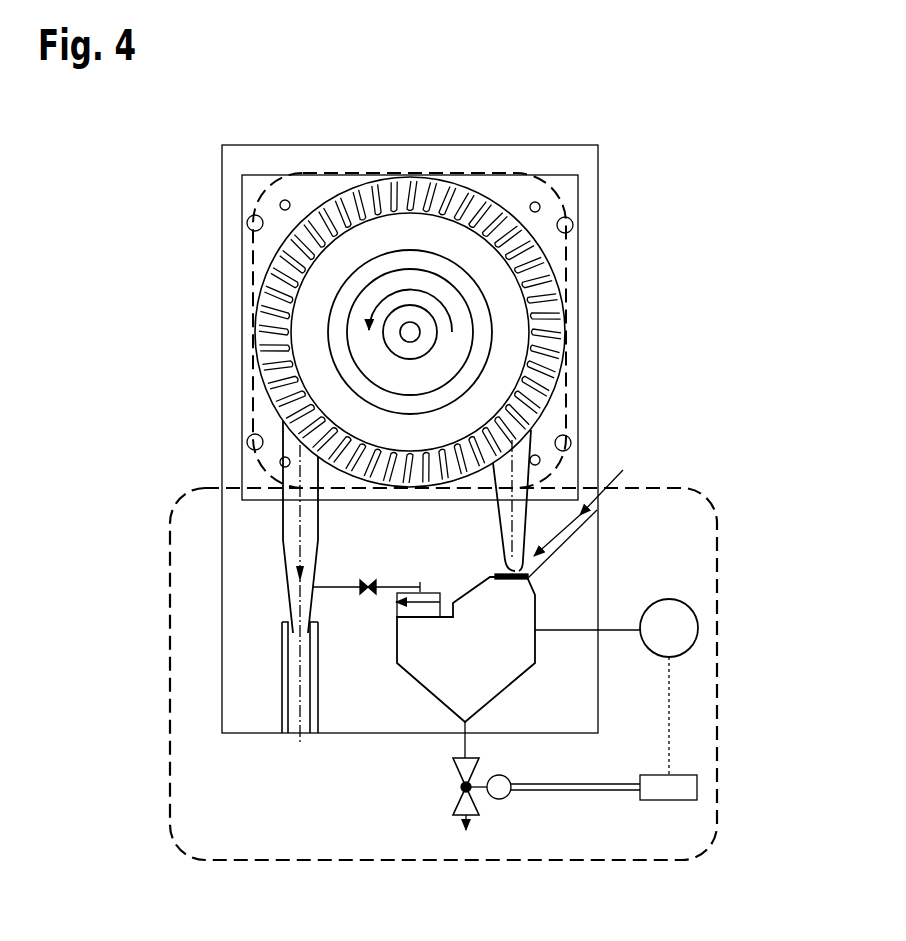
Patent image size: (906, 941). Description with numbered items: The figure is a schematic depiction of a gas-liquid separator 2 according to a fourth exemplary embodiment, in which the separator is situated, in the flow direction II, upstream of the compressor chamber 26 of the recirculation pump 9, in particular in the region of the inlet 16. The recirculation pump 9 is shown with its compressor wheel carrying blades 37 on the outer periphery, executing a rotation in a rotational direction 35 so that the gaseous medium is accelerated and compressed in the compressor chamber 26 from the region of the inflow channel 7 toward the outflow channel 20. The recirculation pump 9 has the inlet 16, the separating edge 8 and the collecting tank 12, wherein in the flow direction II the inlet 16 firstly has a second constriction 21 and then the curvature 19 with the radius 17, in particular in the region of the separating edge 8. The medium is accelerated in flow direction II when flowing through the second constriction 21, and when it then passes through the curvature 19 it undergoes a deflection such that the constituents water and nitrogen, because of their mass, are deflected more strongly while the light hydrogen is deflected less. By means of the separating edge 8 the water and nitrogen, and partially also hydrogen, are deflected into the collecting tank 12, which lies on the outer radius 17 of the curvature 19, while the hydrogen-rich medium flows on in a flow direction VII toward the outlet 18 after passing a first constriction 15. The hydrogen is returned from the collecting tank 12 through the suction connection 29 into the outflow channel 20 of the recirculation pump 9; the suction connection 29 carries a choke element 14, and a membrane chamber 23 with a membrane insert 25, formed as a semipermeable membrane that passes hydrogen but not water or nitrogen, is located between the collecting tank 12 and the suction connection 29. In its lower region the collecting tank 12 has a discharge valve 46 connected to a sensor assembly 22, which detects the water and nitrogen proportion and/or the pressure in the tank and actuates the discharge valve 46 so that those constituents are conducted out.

The gas-liquid separator 2 is at (166, 787).
The inflow channel 7 is at (530, 473).
The separating edge 8 is at (537, 660).
The recirculation pump 9 is at (580, 148).
The collecting tank 12 is at (483, 685).
The choke element 14 is at (364, 594).
The first constriction 15 is at (285, 587).
The inlet 16 is at (528, 570).
The radius 17 is at (528, 577).
The outlet 18 is at (290, 718).
The curvature 19 is at (570, 562).
The outflow channel 20 is at (292, 478).
The second constriction 21 is at (544, 592).
The sensor assembly 22 is at (698, 633).
The membrane chamber 23 is at (393, 603).
The membrane insert 25 is at (423, 608).
The compressor chamber 26 is at (572, 268).
The suction connection 29 is at (345, 585).
The rotational direction 35 is at (418, 292).
The blades 37 is at (568, 298).
The discharge valve 46 is at (477, 807).
The flow direction II is at (625, 468).
The flow direction VII is at (282, 538).